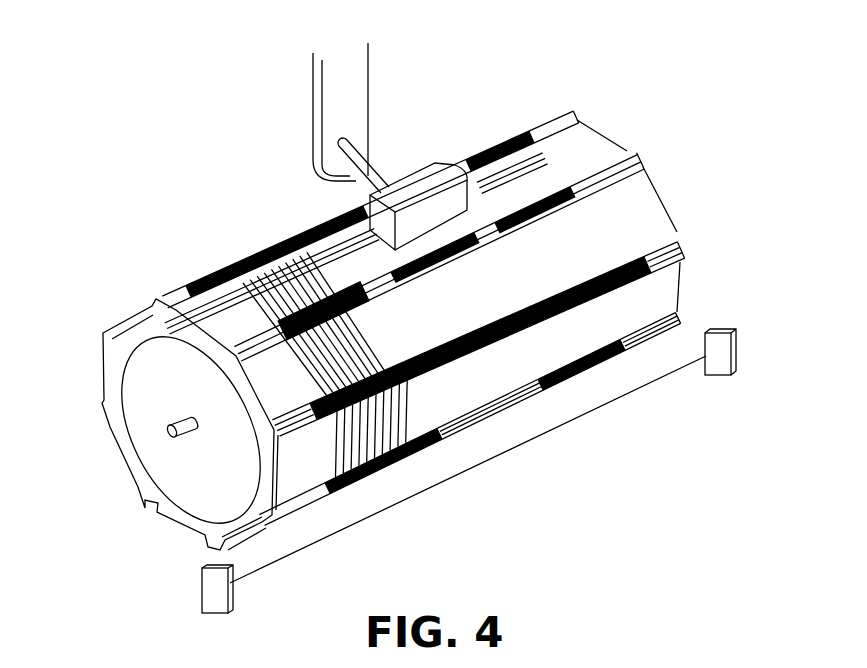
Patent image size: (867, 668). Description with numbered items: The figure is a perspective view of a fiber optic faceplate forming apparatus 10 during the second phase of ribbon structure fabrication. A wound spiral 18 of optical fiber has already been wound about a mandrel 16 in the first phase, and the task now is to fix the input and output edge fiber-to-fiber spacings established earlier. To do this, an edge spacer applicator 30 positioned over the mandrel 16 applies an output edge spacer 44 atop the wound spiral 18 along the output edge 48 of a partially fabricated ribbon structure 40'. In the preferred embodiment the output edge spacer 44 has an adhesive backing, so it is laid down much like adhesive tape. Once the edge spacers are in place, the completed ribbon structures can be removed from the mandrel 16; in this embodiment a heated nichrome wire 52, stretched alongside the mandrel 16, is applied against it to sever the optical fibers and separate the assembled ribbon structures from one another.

The fiber optic faceplate forming apparatus 10 is at (714, 55).
The mandrel 16 is at (645, 201).
The wound spiral 18 is at (367, 435).
The edge spacer applicator 30 is at (358, 206).
The partially fabricated ribbon structure 40' is at (169, 320).
The output edge spacer 44 is at (190, 375).
The output edge 48 is at (273, 247).
The heated nichrome wire 52 is at (470, 466).